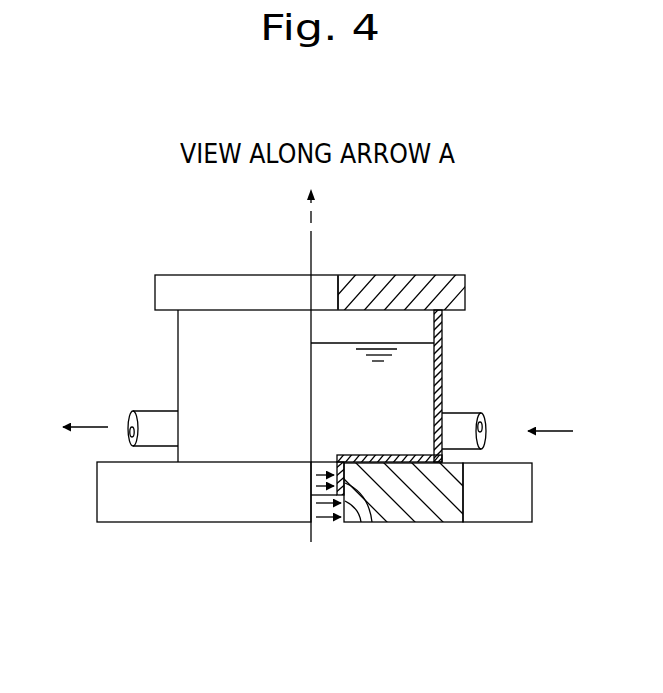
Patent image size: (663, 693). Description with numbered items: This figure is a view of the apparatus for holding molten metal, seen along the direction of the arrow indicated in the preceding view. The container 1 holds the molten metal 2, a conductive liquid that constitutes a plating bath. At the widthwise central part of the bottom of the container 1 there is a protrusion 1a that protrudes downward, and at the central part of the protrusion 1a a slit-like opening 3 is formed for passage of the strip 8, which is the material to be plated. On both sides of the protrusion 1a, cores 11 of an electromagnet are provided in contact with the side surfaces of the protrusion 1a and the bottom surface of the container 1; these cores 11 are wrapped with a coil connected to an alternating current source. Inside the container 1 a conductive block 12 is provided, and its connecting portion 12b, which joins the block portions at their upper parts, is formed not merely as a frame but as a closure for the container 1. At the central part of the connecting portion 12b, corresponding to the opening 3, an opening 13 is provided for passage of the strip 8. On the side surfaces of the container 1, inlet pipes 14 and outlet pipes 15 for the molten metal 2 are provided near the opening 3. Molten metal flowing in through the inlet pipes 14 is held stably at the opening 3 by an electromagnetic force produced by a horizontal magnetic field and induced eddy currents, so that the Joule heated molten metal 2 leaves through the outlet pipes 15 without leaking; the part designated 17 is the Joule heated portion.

The container 1 is at (196, 341).
The protrusion 1a is at (378, 522).
The molten metal 2 is at (403, 362).
The slit-like opening 3 is at (324, 497).
The strip 8 is at (313, 243).
The cores 11 is at (163, 505).
The conductive block 12 is at (207, 274).
The connecting portion 12b is at (447, 282).
The opening 13 is at (340, 291).
The inlet pipes 14 is at (473, 440).
The outlet pipes 15 is at (150, 422).
The Joule heated portion 17 is at (322, 460).